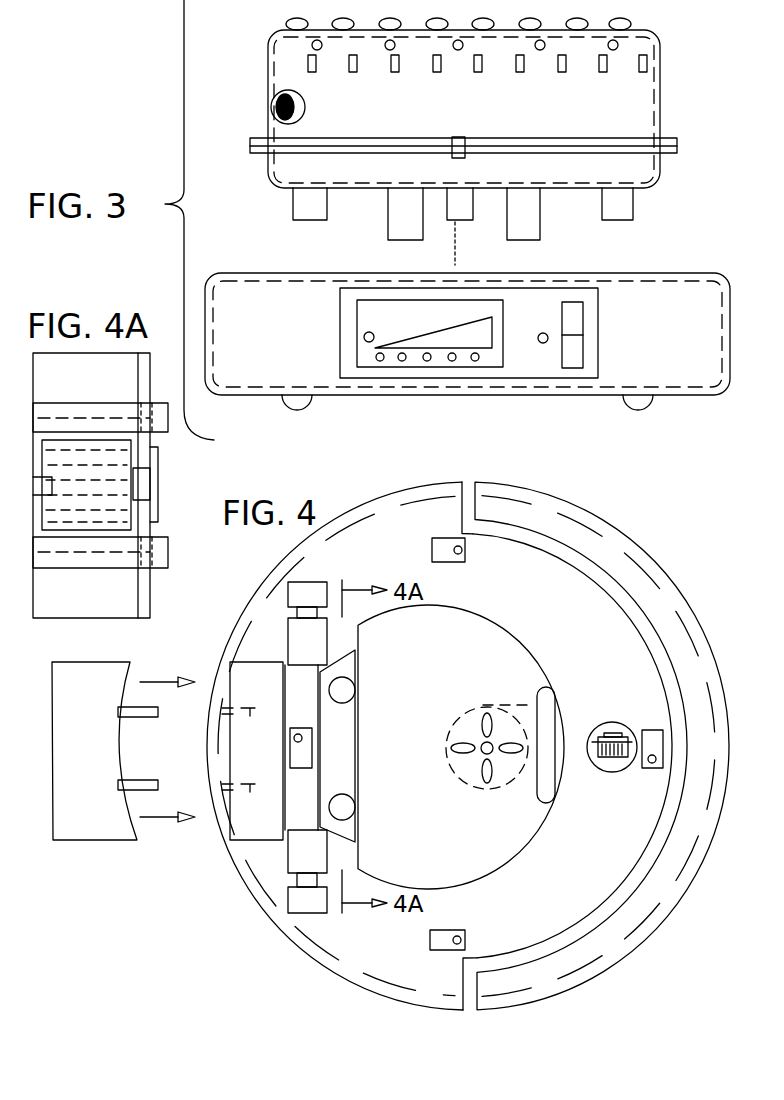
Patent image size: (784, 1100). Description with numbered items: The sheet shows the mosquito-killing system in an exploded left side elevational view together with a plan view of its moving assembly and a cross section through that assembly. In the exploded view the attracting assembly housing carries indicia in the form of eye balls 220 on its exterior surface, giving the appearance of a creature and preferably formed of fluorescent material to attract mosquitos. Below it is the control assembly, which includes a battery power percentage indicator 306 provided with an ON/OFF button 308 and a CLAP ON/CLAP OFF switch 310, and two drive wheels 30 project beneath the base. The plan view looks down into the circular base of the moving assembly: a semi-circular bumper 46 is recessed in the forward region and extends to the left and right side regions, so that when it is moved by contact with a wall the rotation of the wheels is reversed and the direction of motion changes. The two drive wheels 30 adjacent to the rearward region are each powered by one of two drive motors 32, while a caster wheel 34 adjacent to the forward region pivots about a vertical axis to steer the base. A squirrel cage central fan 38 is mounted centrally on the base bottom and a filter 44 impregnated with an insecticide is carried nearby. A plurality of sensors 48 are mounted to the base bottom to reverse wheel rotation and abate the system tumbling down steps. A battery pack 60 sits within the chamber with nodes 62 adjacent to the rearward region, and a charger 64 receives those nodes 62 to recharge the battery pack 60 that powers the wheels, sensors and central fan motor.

In FIG. 3, the eye balls 220 is at (273, 106).
In FIG. 3, the drive wheels 30 is at (292, 411).
In FIG. 4, the drive wheels 30 is at (305, 588).
In FIG. 3, the battery power percentage indicator 306 is at (446, 362).
In FIG. 3, the ON/OFF button 308 is at (543, 344).
In FIG. 3, the CLAP ON/CLAP OFF switch 310 is at (578, 356).
In FIG. 4, the semi-circular bumper 46 is at (597, 533).
In FIG. 4, the filter 44 is at (457, 843).
In FIG. 4, the battery pack 60 is at (270, 759).
In FIG. 4, the drive motors 32 is at (322, 655).
In FIG. 4, the squirrel cage central fan 38 is at (487, 703).
In FIG. 4, the caster wheel 34 is at (618, 740).
In FIG. 4, the sensors 48 is at (440, 538).
In FIG. 4, the nodes 62 is at (222, 708).
In FIG. 4, the charger 64 is at (107, 757).